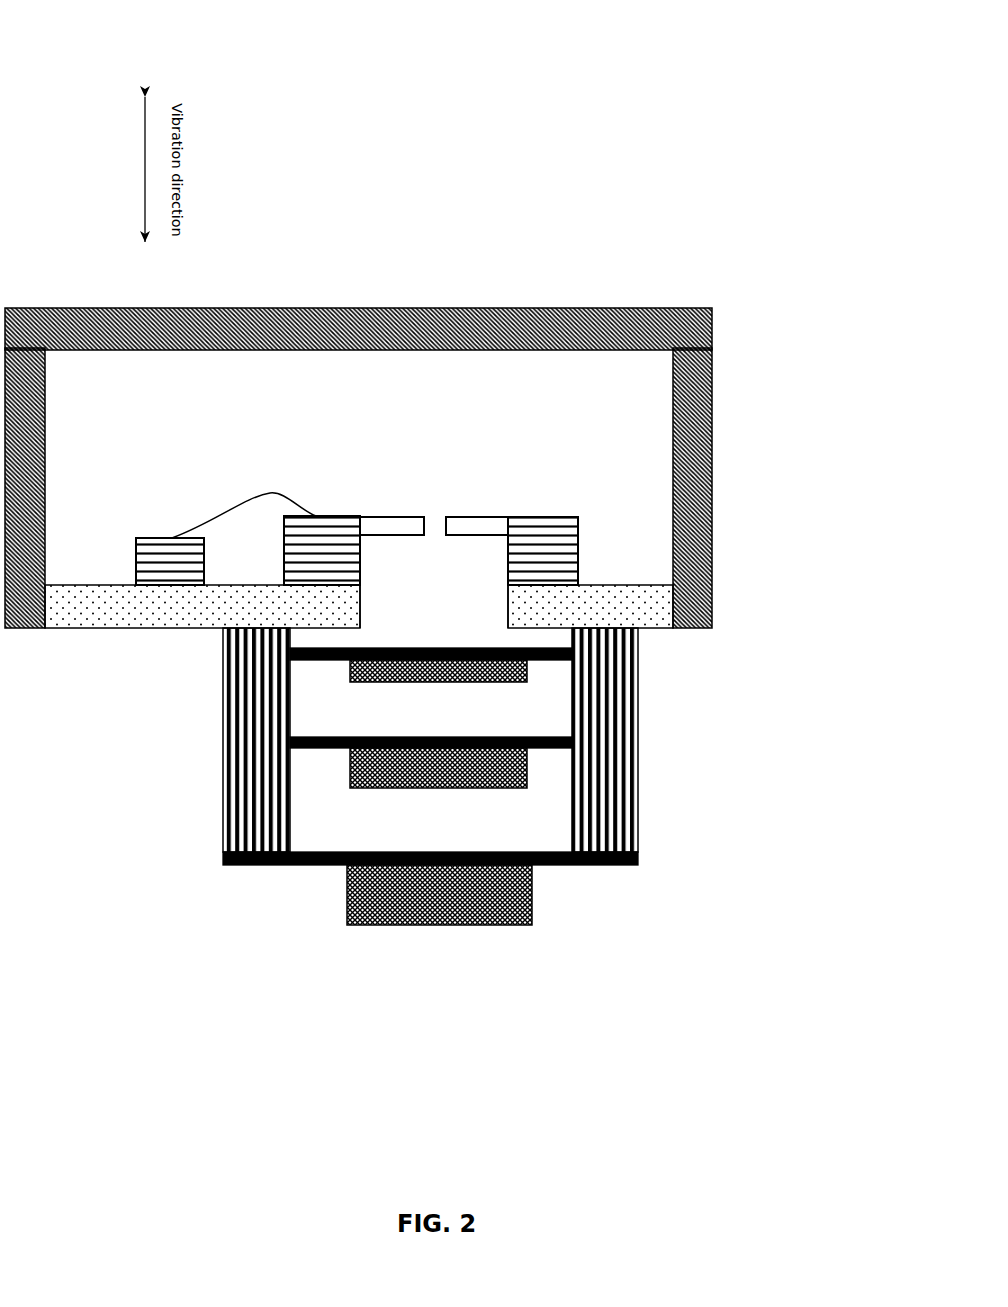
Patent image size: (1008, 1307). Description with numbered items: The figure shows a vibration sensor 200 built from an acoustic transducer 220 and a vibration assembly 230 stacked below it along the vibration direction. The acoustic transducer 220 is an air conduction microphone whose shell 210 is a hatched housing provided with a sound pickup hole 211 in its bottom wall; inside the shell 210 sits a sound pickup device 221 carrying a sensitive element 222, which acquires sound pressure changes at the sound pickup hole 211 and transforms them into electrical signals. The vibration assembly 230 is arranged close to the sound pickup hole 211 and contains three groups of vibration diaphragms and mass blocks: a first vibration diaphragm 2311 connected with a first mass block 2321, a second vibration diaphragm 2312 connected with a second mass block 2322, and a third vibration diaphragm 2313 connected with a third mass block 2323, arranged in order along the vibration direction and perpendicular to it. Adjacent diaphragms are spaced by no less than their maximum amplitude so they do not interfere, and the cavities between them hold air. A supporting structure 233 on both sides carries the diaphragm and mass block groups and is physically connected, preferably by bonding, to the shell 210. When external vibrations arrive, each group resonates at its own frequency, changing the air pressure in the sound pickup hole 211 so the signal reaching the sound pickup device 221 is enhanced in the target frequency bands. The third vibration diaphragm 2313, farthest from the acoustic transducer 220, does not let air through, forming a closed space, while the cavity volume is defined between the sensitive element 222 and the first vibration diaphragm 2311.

The vibration sensor 200 is at (86, 46).
The shell 210 is at (712, 333).
The sound pickup hole 211 is at (415, 618).
The acoustic transducer 220 is at (560, 282).
The sound pickup device 221 is at (580, 530).
The sensitive element 222 is at (492, 517).
The vibration assembly 230 is at (828, 563).
The supporting structure 233 is at (253, 792).
The first vibration diaphragm 2311 is at (525, 648).
The first mass block 2321 is at (528, 680).
The second vibration diaphragm 2312 is at (520, 735).
The second mass block 2322 is at (525, 767).
The third vibration diaphragm 2313 is at (525, 850).
The third mass block 2323 is at (533, 913).